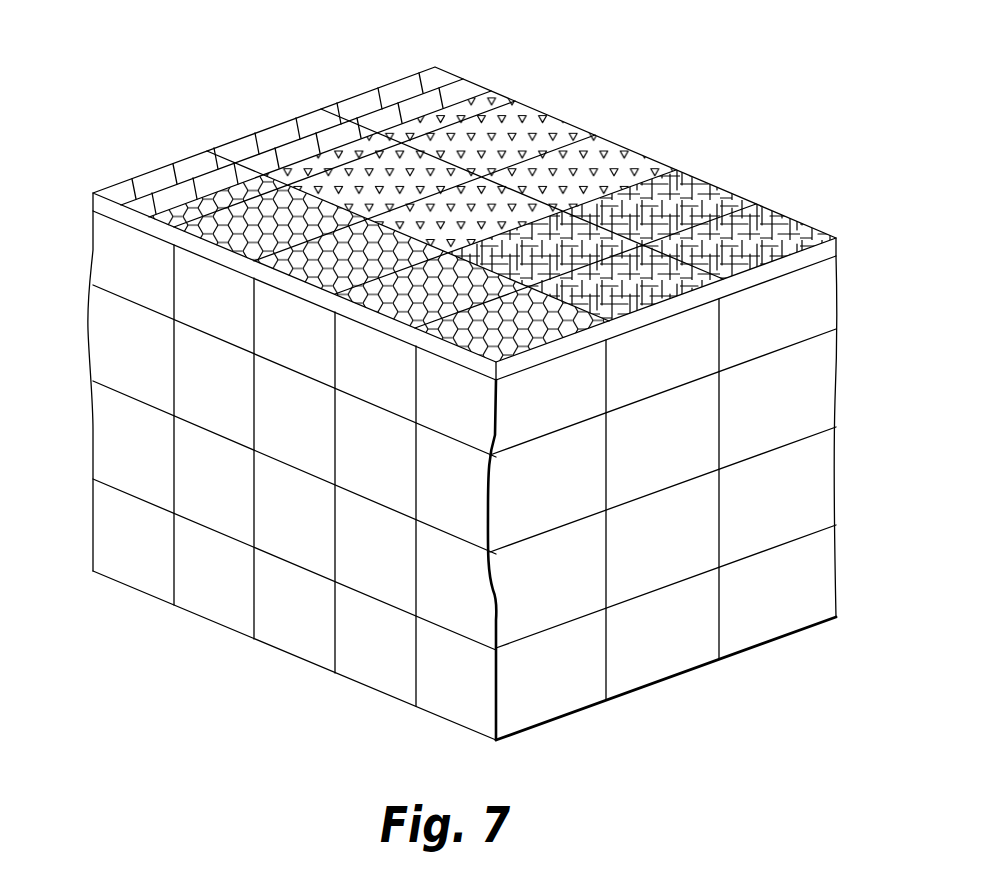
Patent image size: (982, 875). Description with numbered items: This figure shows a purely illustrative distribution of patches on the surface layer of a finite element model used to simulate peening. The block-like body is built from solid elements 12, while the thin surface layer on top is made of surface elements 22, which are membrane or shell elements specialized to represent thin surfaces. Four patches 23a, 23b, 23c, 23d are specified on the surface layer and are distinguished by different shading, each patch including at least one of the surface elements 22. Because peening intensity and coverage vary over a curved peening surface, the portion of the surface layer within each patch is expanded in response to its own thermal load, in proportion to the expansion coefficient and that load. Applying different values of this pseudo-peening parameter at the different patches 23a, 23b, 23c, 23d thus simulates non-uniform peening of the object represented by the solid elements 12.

The solid element 12 is at (118, 432).
The surface element 22 is at (278, 138).
The patch 23a is at (643, 243).
The patch 23b is at (230, 234).
The patch 23c is at (483, 178).
The patch 23d is at (393, 88).